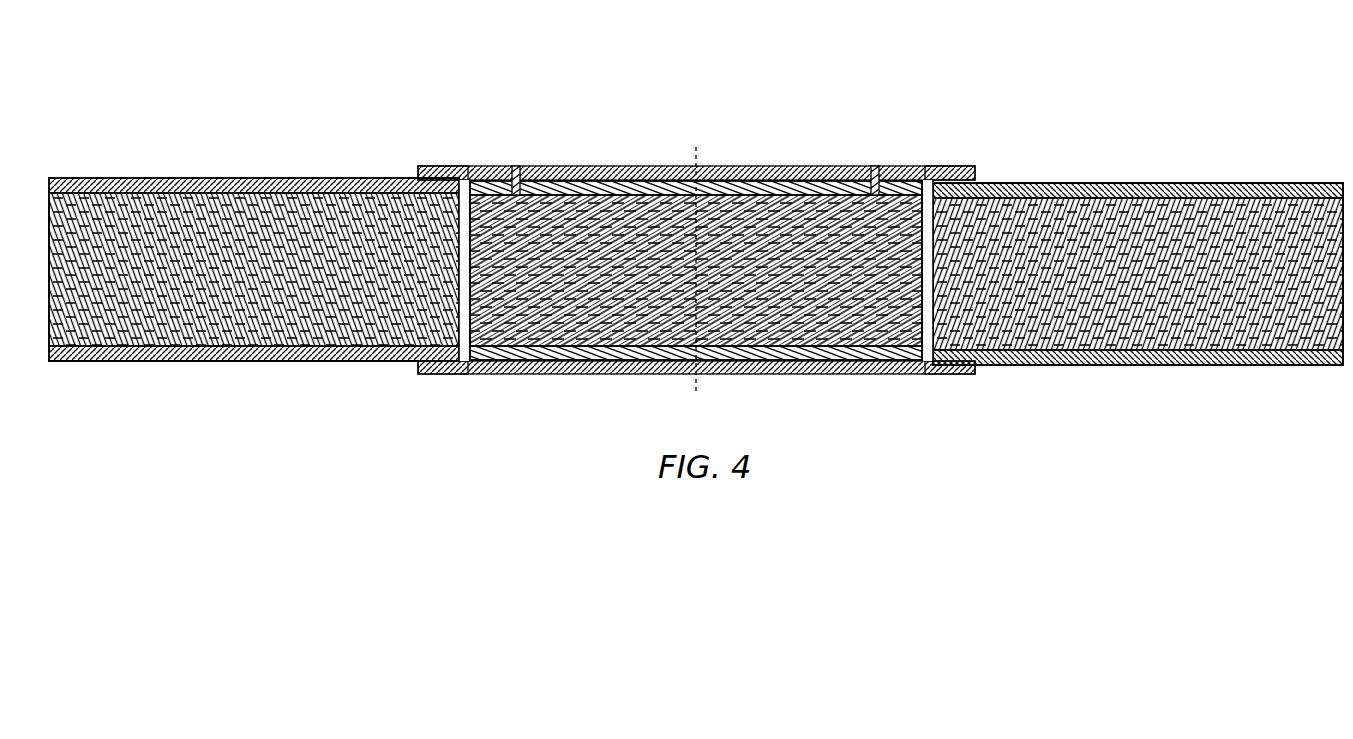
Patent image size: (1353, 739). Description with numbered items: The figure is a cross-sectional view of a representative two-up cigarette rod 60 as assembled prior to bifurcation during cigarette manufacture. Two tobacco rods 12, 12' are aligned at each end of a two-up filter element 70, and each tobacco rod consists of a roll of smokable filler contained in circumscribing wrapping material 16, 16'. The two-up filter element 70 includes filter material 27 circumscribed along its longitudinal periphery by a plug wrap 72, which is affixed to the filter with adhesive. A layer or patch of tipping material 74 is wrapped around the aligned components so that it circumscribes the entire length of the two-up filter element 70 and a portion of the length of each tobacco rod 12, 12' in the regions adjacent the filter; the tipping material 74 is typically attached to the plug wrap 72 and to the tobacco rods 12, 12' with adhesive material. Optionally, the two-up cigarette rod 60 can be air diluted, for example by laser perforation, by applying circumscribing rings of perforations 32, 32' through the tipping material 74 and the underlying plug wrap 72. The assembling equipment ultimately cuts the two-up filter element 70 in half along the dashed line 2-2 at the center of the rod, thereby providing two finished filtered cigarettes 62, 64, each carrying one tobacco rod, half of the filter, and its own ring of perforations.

The tobacco rod 12 is at (1138, 301).
The wrapping material 16 is at (1138, 306).
The tobacco rod 12' is at (254, 306).
The wrapping material 16' is at (254, 246).
The two-up cigarette rod 60 is at (947, 148).
The filtered cigarette 62 is at (402, 150).
The filtered cigarette 64 is at (1152, 150).
The two-up filter element 70 is at (760, 342).
The plug wrap 72 is at (566, 178).
The tipping material 74 is at (520, 370).
The filter material 27 is at (760, 220).
The ring of perforations 32 is at (883, 151).
The ring of perforations 32' is at (521, 155).
The dashed line 2 is at (696, 274).